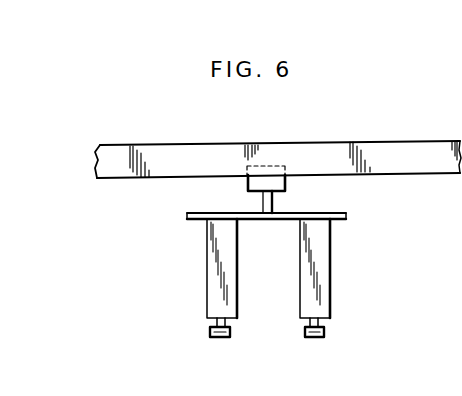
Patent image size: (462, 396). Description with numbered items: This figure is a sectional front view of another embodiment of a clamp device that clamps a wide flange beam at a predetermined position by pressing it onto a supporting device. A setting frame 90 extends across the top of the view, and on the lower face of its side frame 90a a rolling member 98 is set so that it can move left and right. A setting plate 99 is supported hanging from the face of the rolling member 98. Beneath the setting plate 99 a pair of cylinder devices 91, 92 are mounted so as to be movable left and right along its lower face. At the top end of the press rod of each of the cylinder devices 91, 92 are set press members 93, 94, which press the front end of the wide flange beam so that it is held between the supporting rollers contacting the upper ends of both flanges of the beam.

The setting frame 90 is at (225, 143).
The side frame 90a is at (277, 150).
The rolling member 98 is at (280, 186).
The setting plate 99 is at (225, 213).
The cylinder device 91 is at (213, 304).
The cylinder device 92 is at (305, 304).
The press member 93 is at (210, 332).
The press member 94 is at (305, 332).